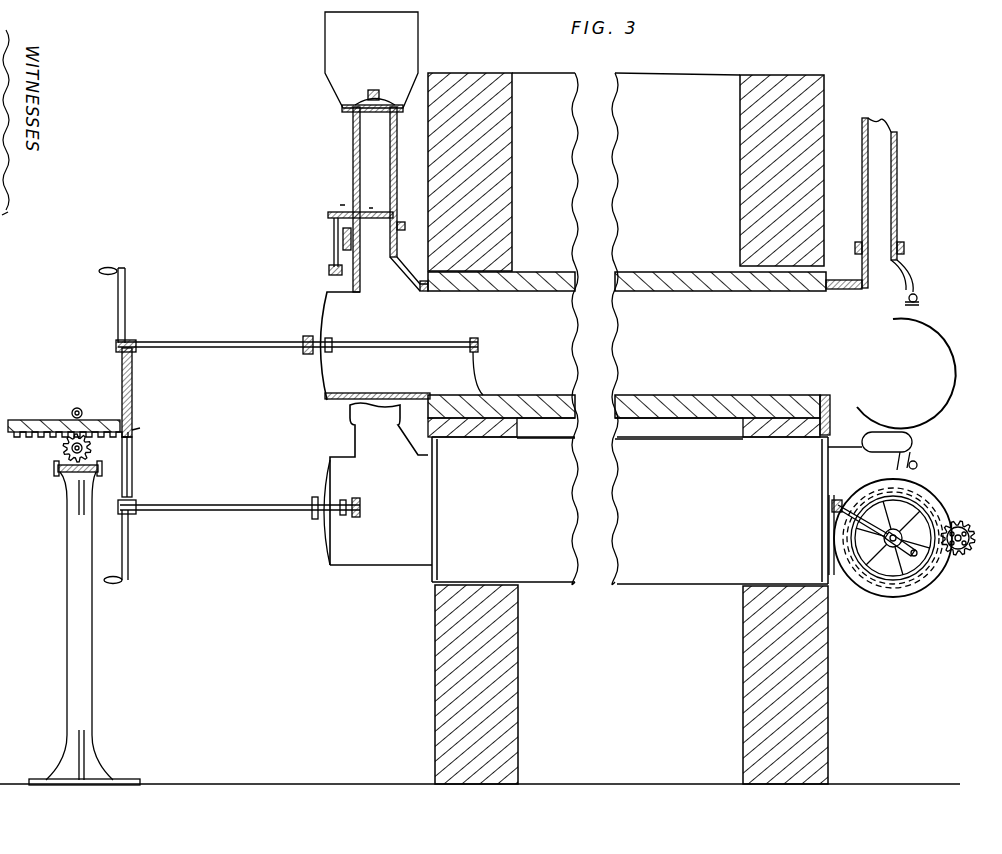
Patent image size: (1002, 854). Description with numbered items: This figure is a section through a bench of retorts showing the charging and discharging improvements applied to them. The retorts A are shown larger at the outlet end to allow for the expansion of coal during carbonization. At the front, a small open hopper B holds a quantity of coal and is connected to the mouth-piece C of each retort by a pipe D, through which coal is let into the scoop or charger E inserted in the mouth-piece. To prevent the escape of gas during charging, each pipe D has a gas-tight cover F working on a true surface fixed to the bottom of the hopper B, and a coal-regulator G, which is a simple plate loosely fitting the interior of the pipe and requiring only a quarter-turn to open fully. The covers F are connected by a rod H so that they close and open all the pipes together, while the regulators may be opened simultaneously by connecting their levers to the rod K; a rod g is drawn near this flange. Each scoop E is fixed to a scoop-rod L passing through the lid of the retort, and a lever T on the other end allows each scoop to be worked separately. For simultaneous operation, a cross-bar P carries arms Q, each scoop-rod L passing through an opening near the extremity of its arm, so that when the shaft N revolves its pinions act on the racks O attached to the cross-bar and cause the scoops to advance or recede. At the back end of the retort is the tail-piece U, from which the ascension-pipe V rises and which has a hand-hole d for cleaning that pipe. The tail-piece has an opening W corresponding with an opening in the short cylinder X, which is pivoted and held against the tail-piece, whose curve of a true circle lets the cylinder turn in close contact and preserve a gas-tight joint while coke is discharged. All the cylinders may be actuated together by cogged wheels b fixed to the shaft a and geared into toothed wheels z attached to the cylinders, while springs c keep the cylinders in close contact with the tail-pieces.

The retort A is at (625, 428).
The hopper B is at (371, 60).
The mouth-piece C is at (377, 428).
The pipe D is at (385, 199).
The scoop E is at (377, 385).
The gas-tight cover F is at (372, 113).
The coal-regulator G is at (352, 204).
The rod g is at (328, 242).
The rod H is at (379, 95).
The rod K is at (329, 270).
The scoop-rod L is at (300, 420).
The shaft N is at (62, 452).
The rack O is at (42, 420).
The cross-bar P is at (141, 427).
The arm Q is at (122, 378).
The lever T is at (125, 298).
The tail-piece U is at (869, 376).
The ascension-pipe V is at (884, 205).
The opening W is at (875, 368).
The short cylinder X is at (950, 352).
The shaft a is at (975, 540).
The cogged wheel b is at (967, 526).
The spring c is at (880, 534).
The hand-hole d is at (917, 297).
The toothed wheel z is at (893, 553).